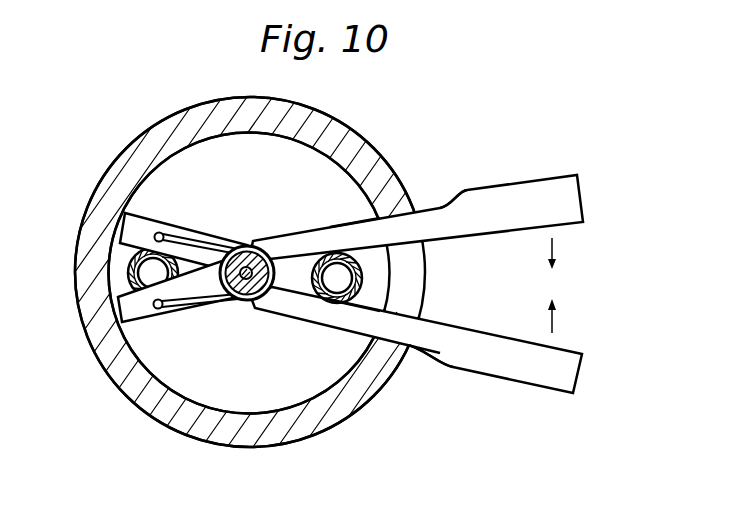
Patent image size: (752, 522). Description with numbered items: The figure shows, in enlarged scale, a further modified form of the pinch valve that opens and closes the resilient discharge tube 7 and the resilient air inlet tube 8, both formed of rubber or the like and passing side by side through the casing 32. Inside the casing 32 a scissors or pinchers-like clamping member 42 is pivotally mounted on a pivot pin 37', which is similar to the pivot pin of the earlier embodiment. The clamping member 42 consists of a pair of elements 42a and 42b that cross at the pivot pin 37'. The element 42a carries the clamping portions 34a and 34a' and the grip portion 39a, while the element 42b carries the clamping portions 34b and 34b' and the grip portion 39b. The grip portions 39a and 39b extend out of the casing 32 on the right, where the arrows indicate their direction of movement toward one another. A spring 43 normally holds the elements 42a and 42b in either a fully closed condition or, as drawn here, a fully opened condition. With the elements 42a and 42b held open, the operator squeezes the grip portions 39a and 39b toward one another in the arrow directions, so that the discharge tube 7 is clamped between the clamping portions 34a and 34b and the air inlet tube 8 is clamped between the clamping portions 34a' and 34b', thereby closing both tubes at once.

The casing 32 is at (232, 440).
The resilient discharge tube 7 is at (128, 272).
The resilient air inlet tube 8 is at (364, 283).
The pivot pin 37' is at (264, 237).
The clamping portion 34a is at (139, 216).
The clamping portion 34b is at (138, 316).
The clamping portion 34a' is at (366, 381).
The clamping portion 34b' is at (378, 181).
The grip portion 39a is at (510, 368).
The grip portion 39b is at (462, 207).
The clamping member 42 is at (427, 353).
The element 42a is at (438, 333).
The element 42b is at (457, 226).
The spring 43 is at (222, 305).